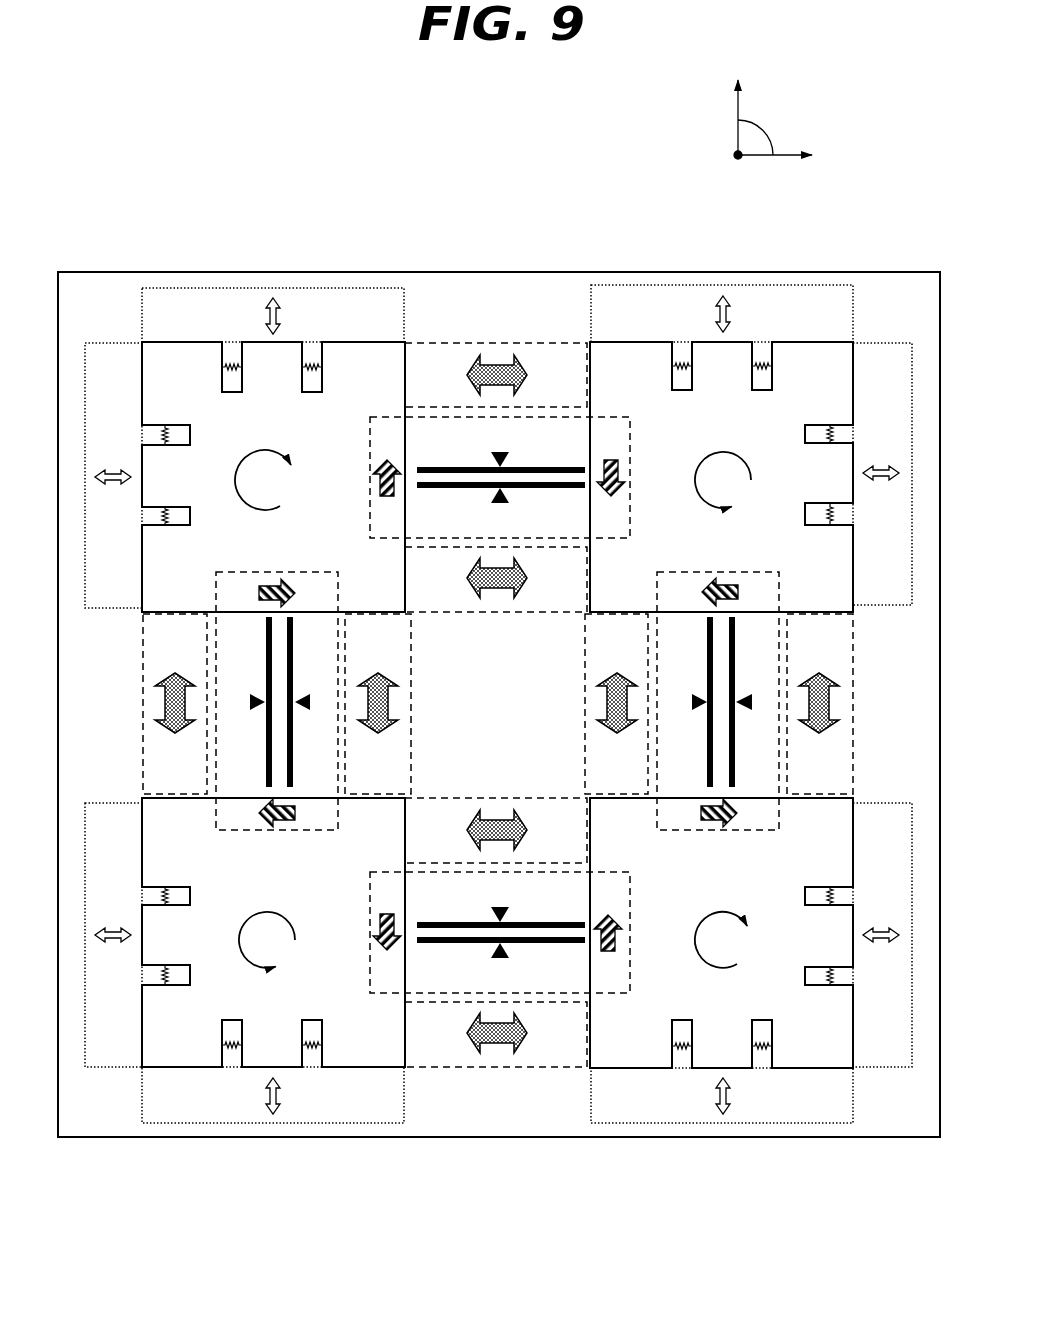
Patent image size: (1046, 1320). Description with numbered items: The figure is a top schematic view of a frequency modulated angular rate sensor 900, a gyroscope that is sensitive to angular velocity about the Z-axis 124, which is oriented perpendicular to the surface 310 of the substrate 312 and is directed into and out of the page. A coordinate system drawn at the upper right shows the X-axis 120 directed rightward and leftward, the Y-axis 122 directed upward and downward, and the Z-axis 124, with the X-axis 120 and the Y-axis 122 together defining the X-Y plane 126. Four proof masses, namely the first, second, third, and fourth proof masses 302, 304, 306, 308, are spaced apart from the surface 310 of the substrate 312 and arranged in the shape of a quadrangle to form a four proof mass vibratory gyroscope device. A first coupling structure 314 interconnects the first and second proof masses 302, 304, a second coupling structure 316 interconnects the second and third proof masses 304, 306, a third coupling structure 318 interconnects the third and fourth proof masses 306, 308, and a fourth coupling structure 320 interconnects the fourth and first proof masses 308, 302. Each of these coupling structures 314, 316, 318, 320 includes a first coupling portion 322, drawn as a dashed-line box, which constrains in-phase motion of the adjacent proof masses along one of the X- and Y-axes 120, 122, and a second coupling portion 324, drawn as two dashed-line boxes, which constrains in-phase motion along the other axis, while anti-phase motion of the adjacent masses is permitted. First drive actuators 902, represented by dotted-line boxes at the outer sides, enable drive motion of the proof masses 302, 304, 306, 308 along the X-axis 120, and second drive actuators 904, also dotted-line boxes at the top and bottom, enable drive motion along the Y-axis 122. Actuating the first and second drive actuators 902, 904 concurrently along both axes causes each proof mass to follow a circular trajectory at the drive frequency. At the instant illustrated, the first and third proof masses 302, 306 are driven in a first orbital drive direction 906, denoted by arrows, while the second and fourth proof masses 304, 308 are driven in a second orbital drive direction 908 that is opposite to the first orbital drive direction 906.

The frequency modulated angular rate sensor 900 is at (542, 1268).
The surface 310 is at (125, 308).
The substrate 312 is at (213, 272).
The first coupling structure 314 is at (485, 318).
The second coupling structure 316 is at (870, 680).
The third coupling structure 318 is at (500, 1080).
The fourth coupling structure 320 is at (127, 698).
The first coupling portion 322 is at (370, 445).
The second coupling portion 324 is at (542, 544).
The first proof mass 302 is at (287, 445).
The second proof mass 304 is at (744, 438).
The third proof mass 306 is at (744, 898).
The fourth proof mass 308 is at (287, 898).
The first drive actuators 902 is at (135, 403).
The second drive actuators 904 is at (210, 330).
The first orbital drive direction 906 is at (236, 480).
The second orbital drive direction 908 is at (695, 480).
The X-axis 120 is at (840, 155).
The Y-axis 122 is at (722, 57).
The Z-axis 124 is at (748, 172).
The X-Y plane 126 is at (763, 133).